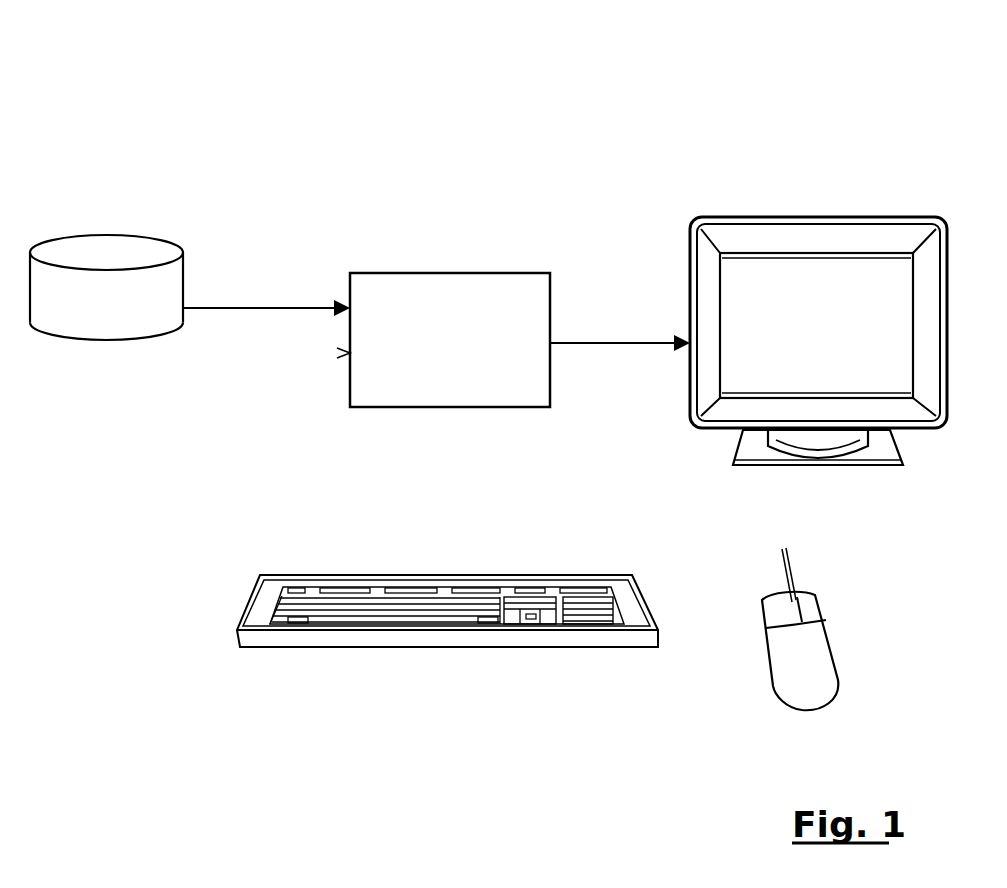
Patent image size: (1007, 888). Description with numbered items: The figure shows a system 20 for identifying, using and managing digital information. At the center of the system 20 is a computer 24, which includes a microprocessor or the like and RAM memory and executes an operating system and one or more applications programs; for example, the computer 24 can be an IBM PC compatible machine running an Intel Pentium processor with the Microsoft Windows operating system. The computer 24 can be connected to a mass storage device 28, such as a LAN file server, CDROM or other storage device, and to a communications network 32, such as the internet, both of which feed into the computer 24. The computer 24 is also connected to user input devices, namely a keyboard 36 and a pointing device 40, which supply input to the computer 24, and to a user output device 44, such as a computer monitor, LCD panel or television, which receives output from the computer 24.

The system 20 is at (193, 94).
The computer 24 is at (450, 340).
The mass storage device 28 is at (106, 287).
The communications network 32 is at (337, 353).
The keyboard 36 is at (450, 420).
The pointing device 40 is at (783, 549).
The user output device 44 is at (818, 341).